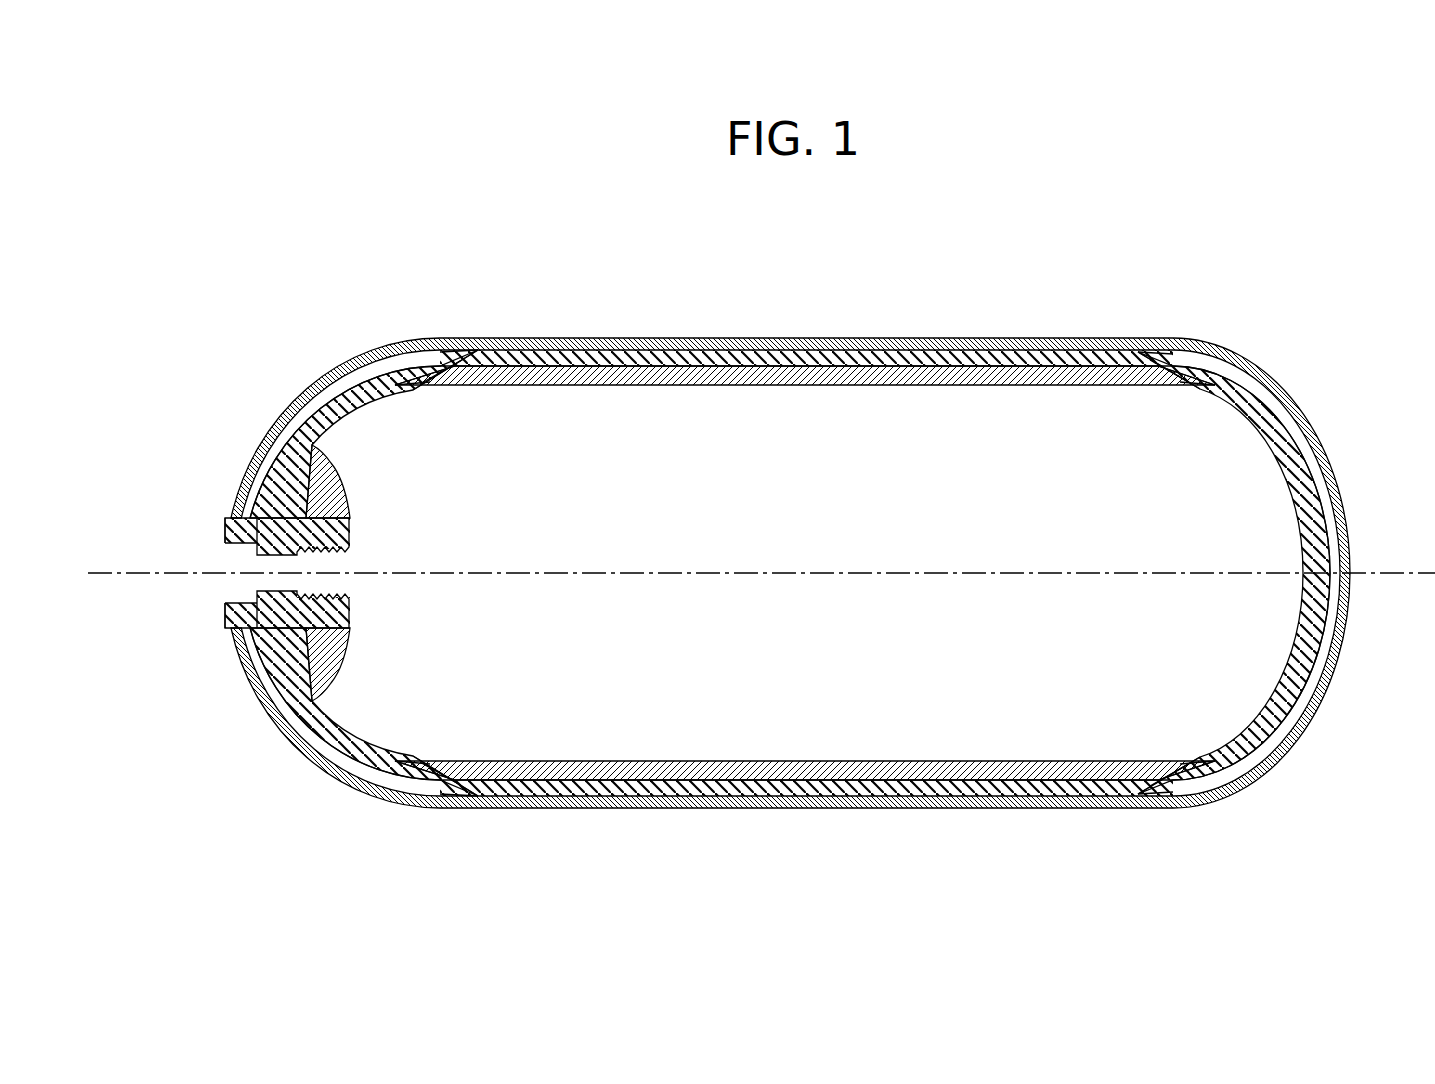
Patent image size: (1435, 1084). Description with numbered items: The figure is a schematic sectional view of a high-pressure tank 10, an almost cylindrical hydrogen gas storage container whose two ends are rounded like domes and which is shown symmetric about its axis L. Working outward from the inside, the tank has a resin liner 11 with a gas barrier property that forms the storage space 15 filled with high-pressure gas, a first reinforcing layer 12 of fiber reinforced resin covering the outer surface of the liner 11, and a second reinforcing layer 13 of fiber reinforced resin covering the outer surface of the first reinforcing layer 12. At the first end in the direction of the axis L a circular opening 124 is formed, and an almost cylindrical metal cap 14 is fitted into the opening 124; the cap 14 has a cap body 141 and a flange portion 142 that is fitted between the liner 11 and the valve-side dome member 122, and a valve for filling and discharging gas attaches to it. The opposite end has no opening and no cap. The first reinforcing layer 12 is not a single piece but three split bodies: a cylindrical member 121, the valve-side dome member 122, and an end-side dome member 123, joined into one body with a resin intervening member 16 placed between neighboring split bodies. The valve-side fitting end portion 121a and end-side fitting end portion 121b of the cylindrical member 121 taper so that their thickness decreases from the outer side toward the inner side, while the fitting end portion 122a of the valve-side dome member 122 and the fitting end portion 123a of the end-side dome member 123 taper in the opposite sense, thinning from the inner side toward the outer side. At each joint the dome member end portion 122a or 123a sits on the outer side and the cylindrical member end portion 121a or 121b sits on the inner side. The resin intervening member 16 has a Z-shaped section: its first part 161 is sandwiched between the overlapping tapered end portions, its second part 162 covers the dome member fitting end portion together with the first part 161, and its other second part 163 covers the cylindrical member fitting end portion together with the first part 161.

The high-pressure tank 10 is at (1233, 250).
The liner 11 is at (862, 372).
The first reinforcing layer 12 is at (740, 356).
The second reinforcing layer 13 is at (660, 340).
The cap 14 is at (143, 430).
The storage space 15 is at (942, 693).
The resin intervening member 16 is at (403, 778).
The cylindrical member 121 is at (790, 387).
The valve-side fitting end portion 121a is at (437, 382).
The end-side fitting end portion 121b is at (1165, 383).
The valve-side dome member 122 is at (288, 447).
The fitting end portion 122a is at (410, 346).
The end-side dome member 123 is at (1300, 517).
The fitting end portion 123a is at (1190, 346).
The opening 124 is at (232, 624).
The cap body 141 is at (262, 518).
The flange portion 142 is at (300, 490).
The first part 161 is at (440, 380).
The second part 162 is at (430, 342).
The second part 163 is at (412, 392).
The axis L is at (1420, 572).